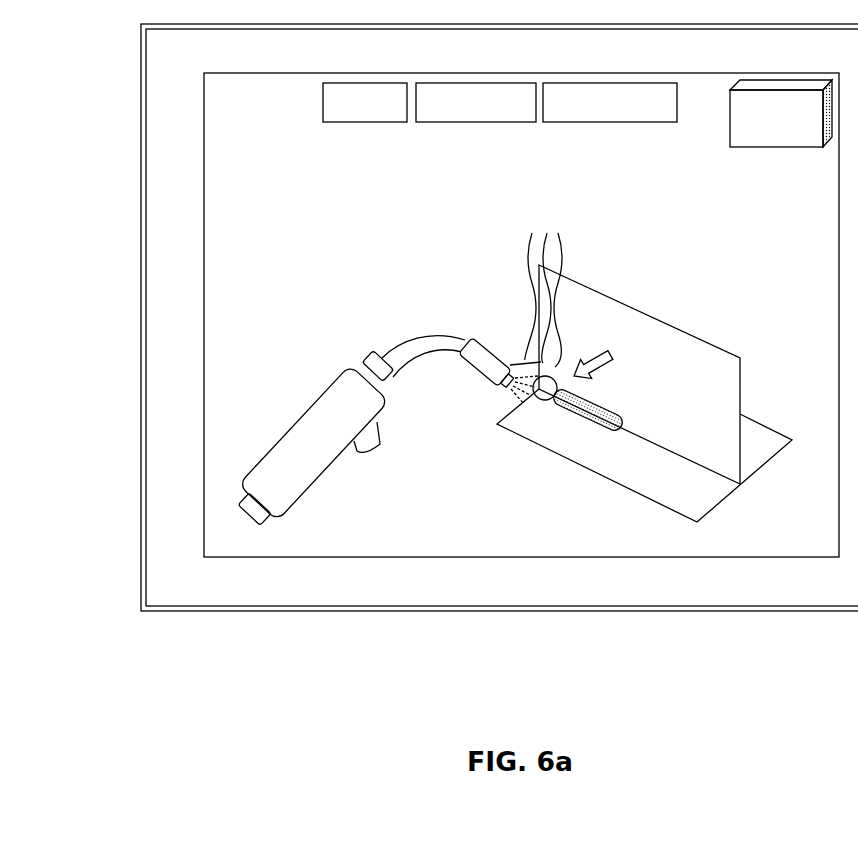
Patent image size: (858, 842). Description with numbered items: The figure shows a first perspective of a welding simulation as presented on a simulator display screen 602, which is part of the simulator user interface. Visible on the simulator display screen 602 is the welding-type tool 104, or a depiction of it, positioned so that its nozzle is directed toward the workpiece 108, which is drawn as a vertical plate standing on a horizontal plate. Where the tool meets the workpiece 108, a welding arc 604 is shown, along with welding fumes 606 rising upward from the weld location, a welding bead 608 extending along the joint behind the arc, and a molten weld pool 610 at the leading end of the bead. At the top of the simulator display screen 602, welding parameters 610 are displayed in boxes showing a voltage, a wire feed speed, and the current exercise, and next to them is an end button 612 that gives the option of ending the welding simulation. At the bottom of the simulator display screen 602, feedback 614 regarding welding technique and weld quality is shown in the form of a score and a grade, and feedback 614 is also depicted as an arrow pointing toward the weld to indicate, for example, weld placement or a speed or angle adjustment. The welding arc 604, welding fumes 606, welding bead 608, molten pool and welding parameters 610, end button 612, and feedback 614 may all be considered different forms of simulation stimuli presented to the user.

The simulator display screen 602 is at (115, 90).
The welding parameters 610 is at (608, 122).
The end button 612 is at (778, 148).
The workpiece 108 is at (752, 360).
The welding bead 608 is at (580, 418).
The welding fumes 606 is at (506, 280).
The welding-type tool 104 is at (336, 355).
The welding arc 604 is at (515, 353).
The feedback 614 is at (617, 353).